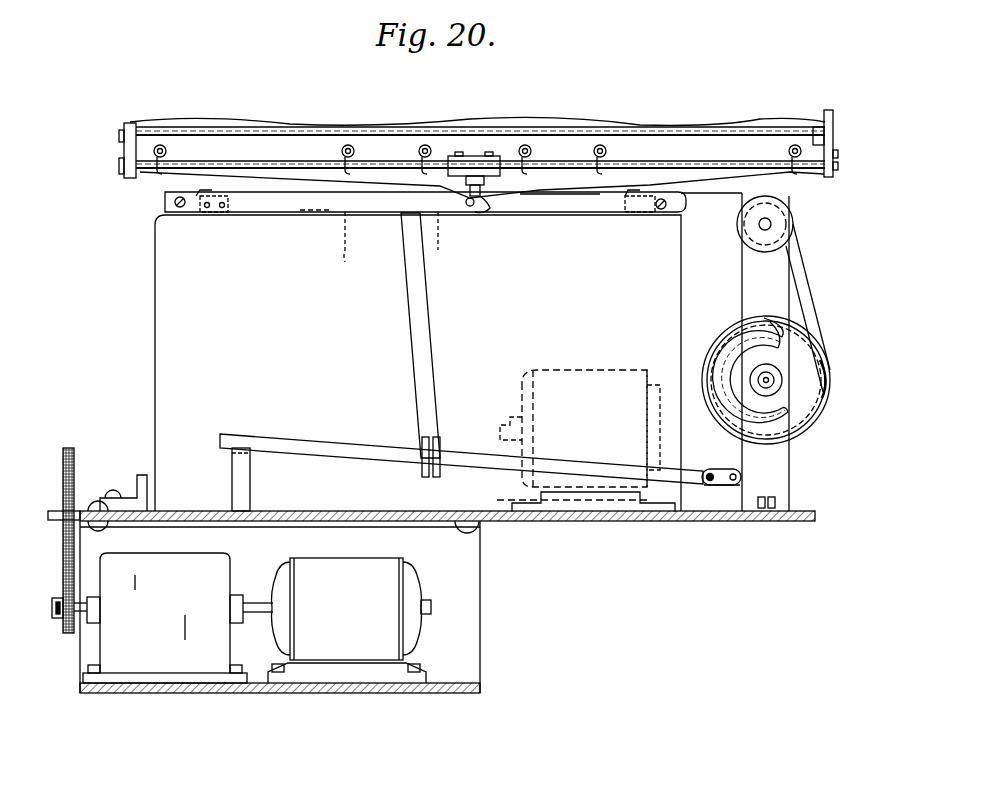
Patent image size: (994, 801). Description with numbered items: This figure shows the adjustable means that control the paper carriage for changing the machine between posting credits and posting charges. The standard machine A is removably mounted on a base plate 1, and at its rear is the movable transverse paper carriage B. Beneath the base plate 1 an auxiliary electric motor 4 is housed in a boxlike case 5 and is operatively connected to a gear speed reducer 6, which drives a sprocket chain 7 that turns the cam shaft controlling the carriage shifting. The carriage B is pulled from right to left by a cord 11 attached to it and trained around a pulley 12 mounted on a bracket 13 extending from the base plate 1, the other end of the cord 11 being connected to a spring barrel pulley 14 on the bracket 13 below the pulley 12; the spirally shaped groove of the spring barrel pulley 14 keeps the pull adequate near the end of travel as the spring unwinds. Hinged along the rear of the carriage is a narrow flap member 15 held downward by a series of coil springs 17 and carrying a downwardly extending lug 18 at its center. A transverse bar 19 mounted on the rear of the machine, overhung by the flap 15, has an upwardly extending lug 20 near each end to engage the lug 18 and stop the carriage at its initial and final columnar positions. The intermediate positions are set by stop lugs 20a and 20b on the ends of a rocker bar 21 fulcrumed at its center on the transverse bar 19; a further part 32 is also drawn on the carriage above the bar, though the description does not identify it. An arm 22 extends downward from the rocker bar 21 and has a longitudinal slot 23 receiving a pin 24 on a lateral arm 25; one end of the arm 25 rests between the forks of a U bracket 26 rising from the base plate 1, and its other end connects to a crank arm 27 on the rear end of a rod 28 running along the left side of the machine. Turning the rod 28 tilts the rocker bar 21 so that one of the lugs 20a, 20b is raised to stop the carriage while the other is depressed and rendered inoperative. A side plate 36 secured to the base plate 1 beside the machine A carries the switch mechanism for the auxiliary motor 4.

The base plate 1 is at (570, 522).
The auxiliary electric motor 4 is at (348, 668).
The boxlike case 5 is at (470, 683).
The gear speed reducer 6 is at (171, 618).
The sprocket chain 7 is at (69, 448).
The cord 11 is at (808, 322).
The pulley 12 is at (772, 222).
The bracket 13 is at (740, 292).
The spring barrel pulley 14 is at (718, 388).
The flap member 15 is at (330, 196).
The coil springs 17 is at (161, 145).
The lug 18 is at (476, 210).
The transverse bar 19 is at (583, 205).
The lug 20 is at (206, 194).
The stop lug 20a is at (342, 242).
The stop lug 20b is at (490, 200).
The rocker bar 21 is at (441, 218).
The arm 22 is at (428, 369).
The longitudinal slot 23 is at (430, 440).
The pin 24 is at (440, 455).
The lateral arm 25 is at (530, 460).
The U bracket 26 is at (240, 468).
The crank arm 27 is at (724, 486).
The rod 28 is at (710, 469).
The carriage 32 is at (475, 154).
The side plate 36 is at (138, 482).
The standard machine A is at (155, 326).
The paper carriage B is at (304, 128).